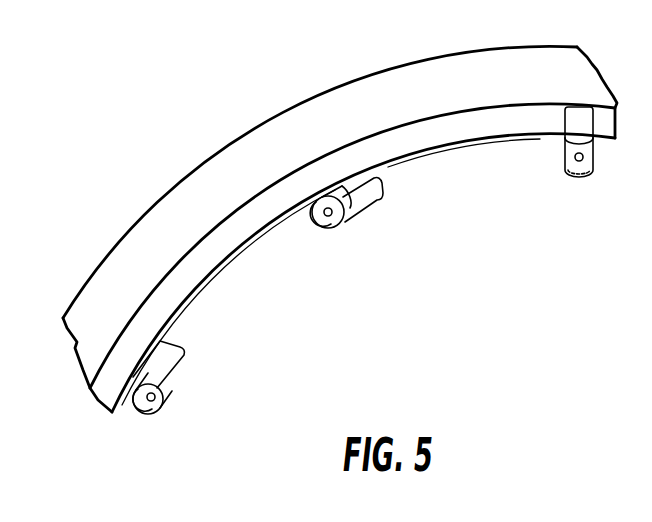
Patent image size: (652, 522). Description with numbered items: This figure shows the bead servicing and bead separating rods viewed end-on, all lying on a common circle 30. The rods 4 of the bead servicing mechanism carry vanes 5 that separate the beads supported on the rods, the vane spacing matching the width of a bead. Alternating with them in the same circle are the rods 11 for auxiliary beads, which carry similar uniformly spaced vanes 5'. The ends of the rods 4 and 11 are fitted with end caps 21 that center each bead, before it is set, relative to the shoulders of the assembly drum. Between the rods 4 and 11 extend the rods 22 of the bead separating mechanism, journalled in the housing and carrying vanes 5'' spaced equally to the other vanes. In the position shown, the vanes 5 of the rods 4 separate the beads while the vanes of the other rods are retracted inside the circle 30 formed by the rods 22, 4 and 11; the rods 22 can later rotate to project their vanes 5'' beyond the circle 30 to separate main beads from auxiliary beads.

The circle 30 is at (242, 254).
The vanes 5 is at (563, 145).
The rods 4 is at (583, 157).
The vanes 5' is at (371, 217).
The rods 11 is at (340, 218).
The end caps 21 is at (332, 232).
The vanes 5'' is at (174, 369).
The rods 22 is at (156, 401).